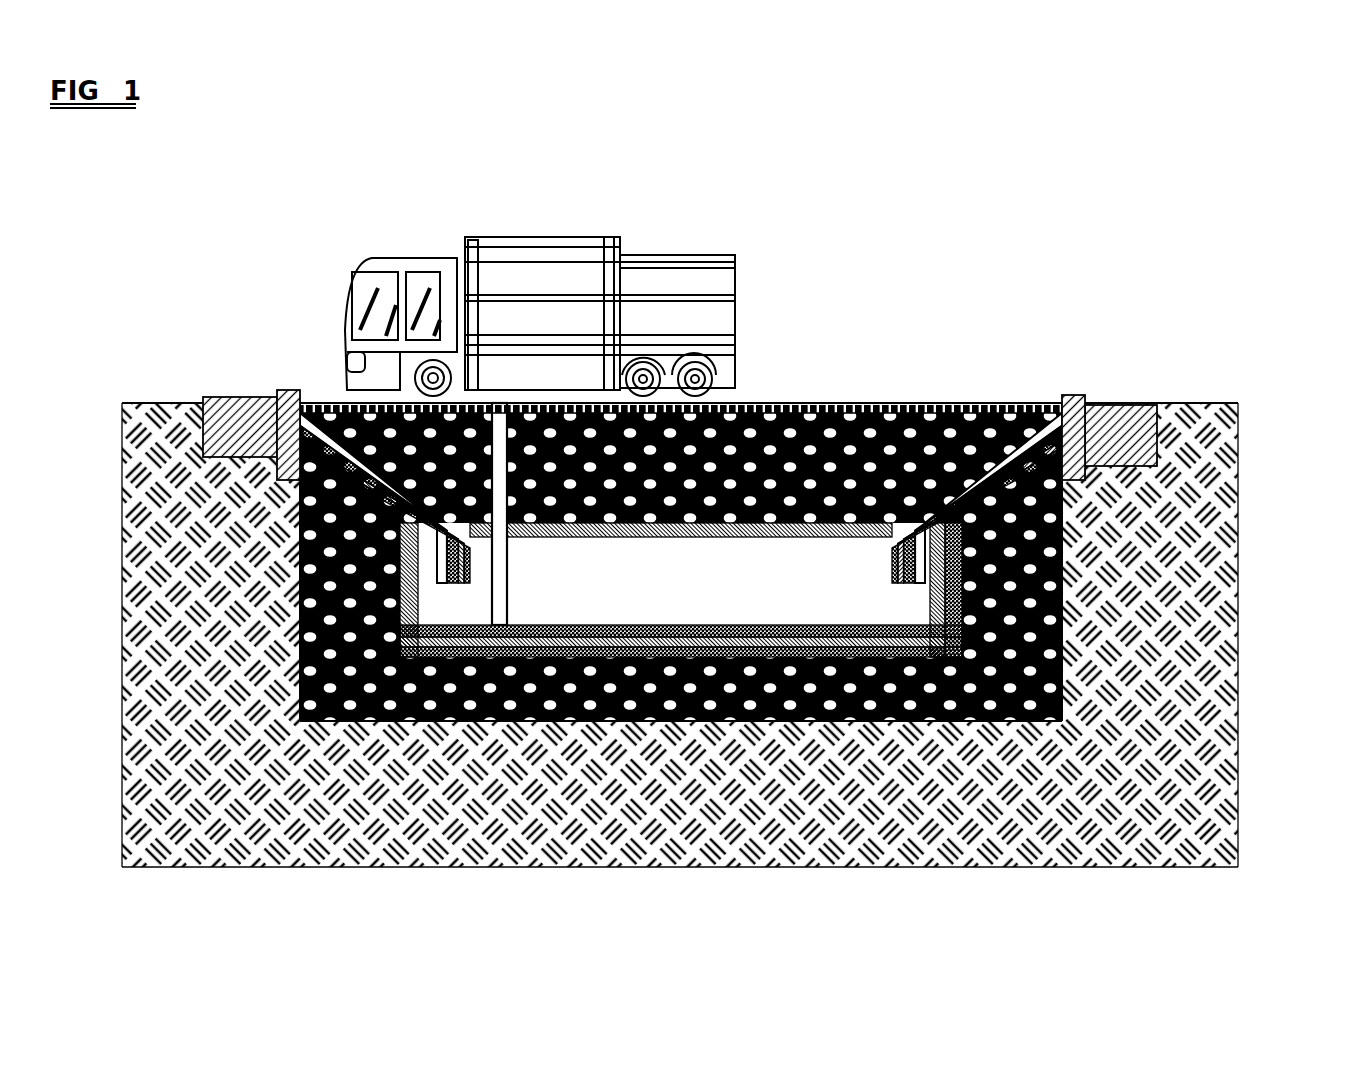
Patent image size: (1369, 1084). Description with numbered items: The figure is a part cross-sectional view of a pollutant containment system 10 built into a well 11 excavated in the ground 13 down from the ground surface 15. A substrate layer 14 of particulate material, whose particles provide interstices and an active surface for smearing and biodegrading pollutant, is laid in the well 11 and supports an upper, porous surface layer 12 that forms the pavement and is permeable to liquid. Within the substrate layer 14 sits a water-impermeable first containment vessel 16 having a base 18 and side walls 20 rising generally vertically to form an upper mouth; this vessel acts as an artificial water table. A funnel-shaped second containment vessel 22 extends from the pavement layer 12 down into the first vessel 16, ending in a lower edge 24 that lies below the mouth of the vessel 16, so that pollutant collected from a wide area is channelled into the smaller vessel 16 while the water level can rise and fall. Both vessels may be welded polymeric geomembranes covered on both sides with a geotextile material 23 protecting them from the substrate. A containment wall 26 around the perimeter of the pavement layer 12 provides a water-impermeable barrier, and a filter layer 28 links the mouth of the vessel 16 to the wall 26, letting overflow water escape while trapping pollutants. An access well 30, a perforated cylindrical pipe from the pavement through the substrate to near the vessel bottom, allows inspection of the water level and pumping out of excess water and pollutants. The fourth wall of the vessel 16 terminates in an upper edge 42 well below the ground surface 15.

The pollutant containment system 10 is at (793, 328).
The well 11 is at (1063, 518).
The surface layer 12 is at (960, 402).
The ground 13 is at (1140, 548).
The substrate layer 14 is at (863, 402).
The ground surface 15 is at (192, 400).
The containment vessel 16 is at (1050, 723).
The base 18 is at (673, 660).
The side walls 20 is at (1063, 640).
The second containment vessel 22 is at (323, 398).
The geotextile material 23 is at (567, 650).
The lower edge 24 is at (470, 653).
The containment wall 26 is at (1118, 430).
The filter layer 28 is at (1020, 406).
The access well 30 is at (497, 402).
The upper edge 42 is at (295, 515).